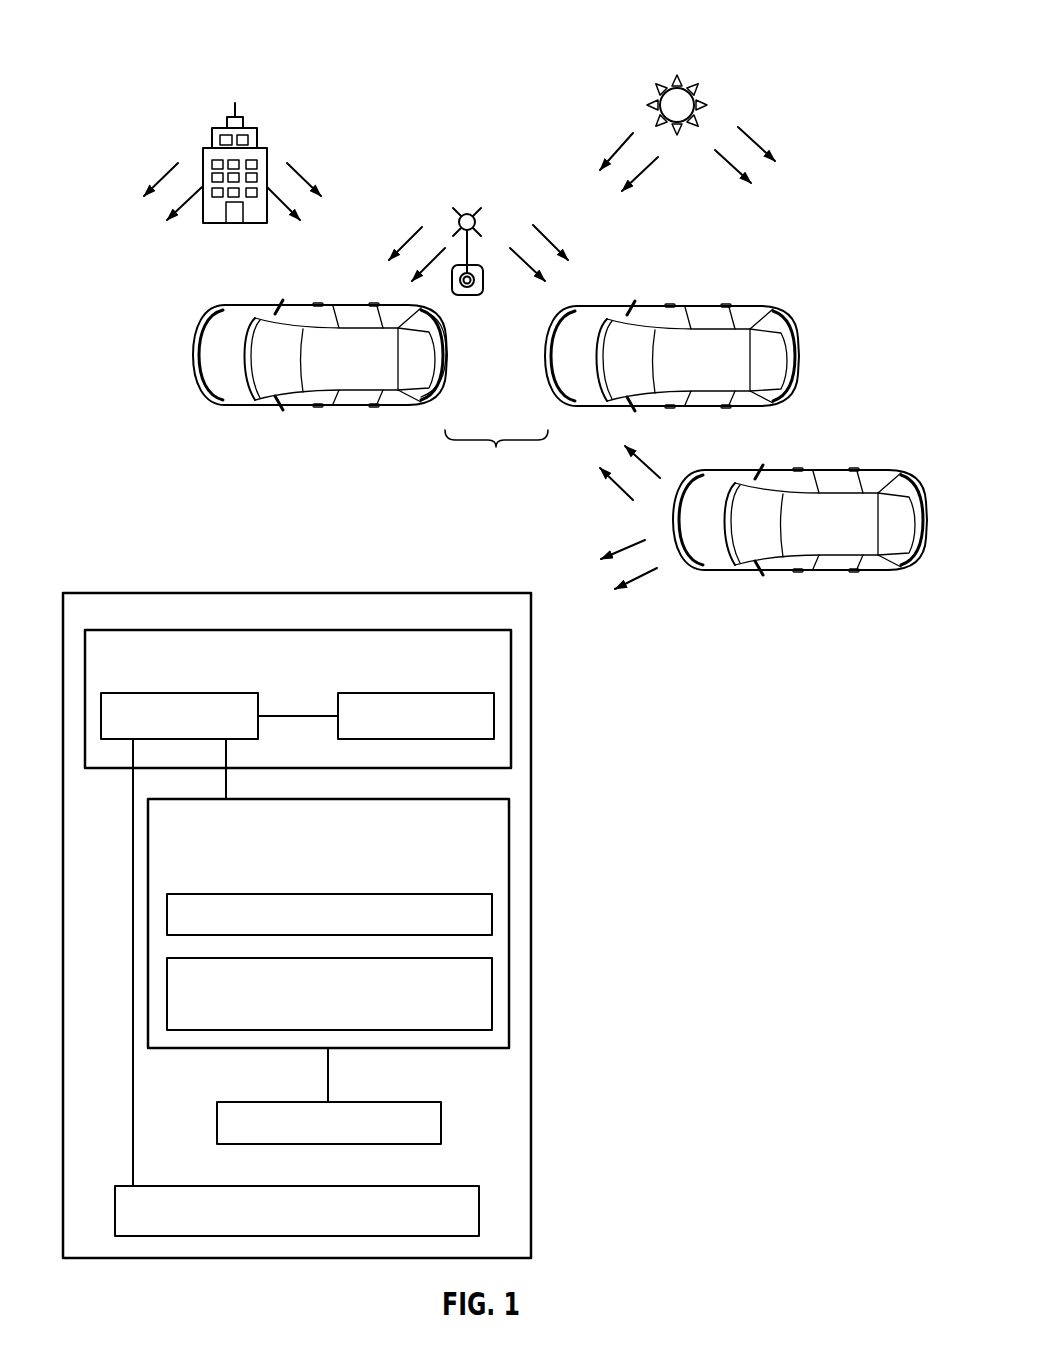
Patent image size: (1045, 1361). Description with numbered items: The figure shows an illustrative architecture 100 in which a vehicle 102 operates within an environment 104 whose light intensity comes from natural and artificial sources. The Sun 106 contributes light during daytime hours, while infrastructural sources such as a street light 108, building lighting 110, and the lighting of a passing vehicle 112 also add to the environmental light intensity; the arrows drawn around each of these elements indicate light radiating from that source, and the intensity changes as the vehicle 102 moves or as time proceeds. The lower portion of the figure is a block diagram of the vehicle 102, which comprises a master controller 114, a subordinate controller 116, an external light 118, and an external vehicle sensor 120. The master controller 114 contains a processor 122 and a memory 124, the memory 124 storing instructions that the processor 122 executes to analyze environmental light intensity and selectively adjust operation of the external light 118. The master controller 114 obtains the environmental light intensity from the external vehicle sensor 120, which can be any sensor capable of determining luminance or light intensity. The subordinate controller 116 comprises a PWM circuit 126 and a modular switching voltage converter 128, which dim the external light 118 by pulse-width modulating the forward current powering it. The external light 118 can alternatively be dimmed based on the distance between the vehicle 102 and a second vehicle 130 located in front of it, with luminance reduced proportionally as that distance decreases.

The architecture 100 is at (790, 32).
The vehicle 102 is at (371, 372).
The environment 104 is at (124, 58).
The Sun 106 is at (651, 109).
The street light 108 is at (436, 184).
The building lighting 110 is at (198, 102).
The passing vehicle 112 is at (849, 534).
The master controller 114 is at (152, 629).
The subordinate controller 116 is at (509, 845).
The external light 118 is at (449, 350).
The external vehicle sensor 120 is at (412, 1186).
The processor 122 is at (166, 692).
The memory 124 is at (404, 692).
The PWM circuit 126 is at (235, 893).
The modular switching voltage converter 128 is at (492, 1003).
The second vehicle 130 is at (723, 367).